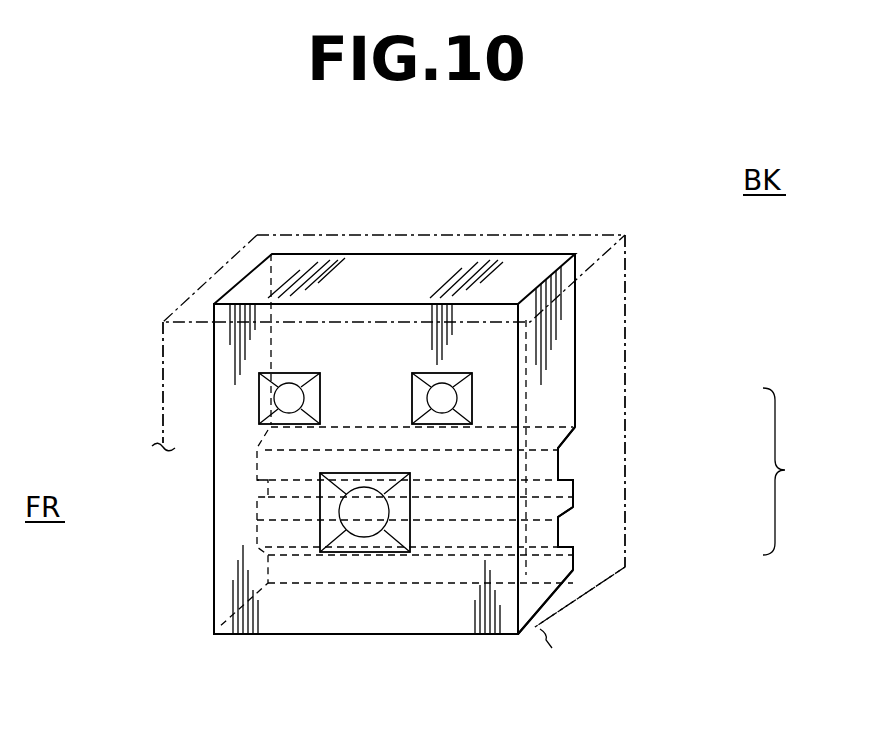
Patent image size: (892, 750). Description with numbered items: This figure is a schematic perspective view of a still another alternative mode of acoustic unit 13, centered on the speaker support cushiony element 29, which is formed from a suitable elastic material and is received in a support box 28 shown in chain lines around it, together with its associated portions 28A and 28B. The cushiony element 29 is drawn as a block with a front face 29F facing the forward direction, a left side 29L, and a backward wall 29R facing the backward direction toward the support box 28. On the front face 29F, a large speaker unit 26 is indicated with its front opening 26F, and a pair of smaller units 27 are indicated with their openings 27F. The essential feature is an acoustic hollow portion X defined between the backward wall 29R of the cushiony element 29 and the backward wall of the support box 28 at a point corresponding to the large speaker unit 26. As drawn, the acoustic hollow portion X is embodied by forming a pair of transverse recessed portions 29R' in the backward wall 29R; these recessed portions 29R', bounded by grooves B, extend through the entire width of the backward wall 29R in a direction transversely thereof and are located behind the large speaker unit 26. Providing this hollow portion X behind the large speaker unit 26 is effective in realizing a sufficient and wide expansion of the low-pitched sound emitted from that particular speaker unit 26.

The acoustic unit 13 is at (436, 408).
The large speaker unit 26 is at (325, 512).
The front opening of engagement hole 26F is at (405, 530).
The engagement holes 27 is at (259, 398).
The front openings of engagement holes 27F is at (413, 397).
The support box 28 is at (399, 434).
The side wall portions 28A is at (163, 345).
The bottom portion 28B is at (627, 405).
The speaker support cushiony element 29 is at (416, 263).
The front surface 29F is at (377, 617).
The backward wall 29R is at (635, 444).
The transverse recessed portions 29R' is at (659, 514).
The left side surface 29L is at (214, 560).
The grooves B is at (565, 462).
The acoustic hollow portion X is at (787, 471).